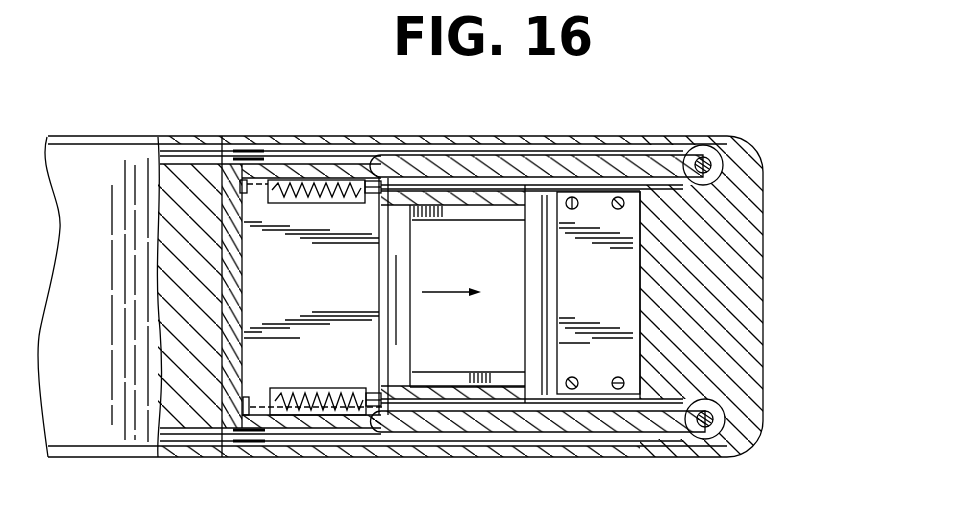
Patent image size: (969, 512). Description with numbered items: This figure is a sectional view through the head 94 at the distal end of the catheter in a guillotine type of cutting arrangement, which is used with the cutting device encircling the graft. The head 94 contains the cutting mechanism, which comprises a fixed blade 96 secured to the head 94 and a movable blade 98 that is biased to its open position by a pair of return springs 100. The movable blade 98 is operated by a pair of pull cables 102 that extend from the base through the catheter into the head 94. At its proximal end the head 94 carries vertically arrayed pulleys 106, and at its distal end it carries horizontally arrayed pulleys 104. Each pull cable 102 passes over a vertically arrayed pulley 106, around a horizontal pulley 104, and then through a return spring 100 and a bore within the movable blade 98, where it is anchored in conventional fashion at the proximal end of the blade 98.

The head 94 is at (768, 245).
The fixed blade 96 is at (612, 295).
The movable blade 98 is at (313, 297).
The return springs 100 is at (318, 178).
The pull cables 102 is at (511, 153).
The horizontally arrayed pulleys 104 is at (712, 152).
The vertically arrayed pulleys 106 is at (247, 149).